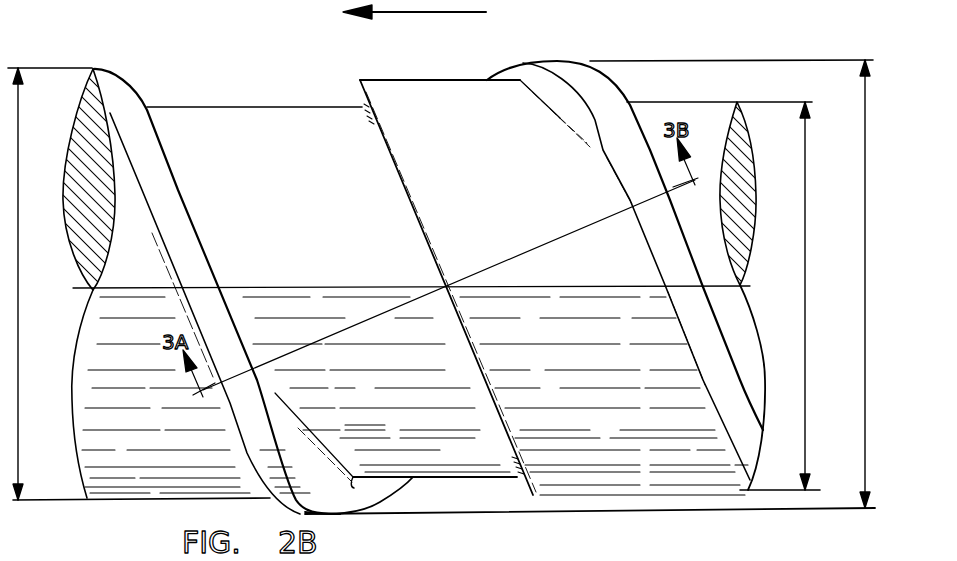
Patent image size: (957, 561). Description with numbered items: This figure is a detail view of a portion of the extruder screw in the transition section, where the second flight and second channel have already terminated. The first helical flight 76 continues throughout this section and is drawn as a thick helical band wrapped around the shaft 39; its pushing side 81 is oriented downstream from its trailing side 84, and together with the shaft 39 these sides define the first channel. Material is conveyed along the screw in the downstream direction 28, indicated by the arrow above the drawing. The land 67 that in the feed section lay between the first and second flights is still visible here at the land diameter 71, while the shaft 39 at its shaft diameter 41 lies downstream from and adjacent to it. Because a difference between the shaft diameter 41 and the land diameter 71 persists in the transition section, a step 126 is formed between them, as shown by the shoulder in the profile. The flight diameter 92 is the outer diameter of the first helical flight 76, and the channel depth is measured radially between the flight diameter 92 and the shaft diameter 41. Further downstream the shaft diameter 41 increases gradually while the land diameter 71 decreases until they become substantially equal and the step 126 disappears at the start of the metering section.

The first helical flight 76 is at (96, 70).
The trailing side 84 is at (125, 77).
The shaft 39 is at (230, 107).
The step 126 is at (358, 88).
The land 67 is at (401, 80).
The pushing side 81 is at (529, 68).
The downstream direction 28 is at (429, 12).
The land diameter 71 is at (20, 288).
The shaft diameter 41 is at (805, 277).
The flight diameter 92 is at (865, 298).